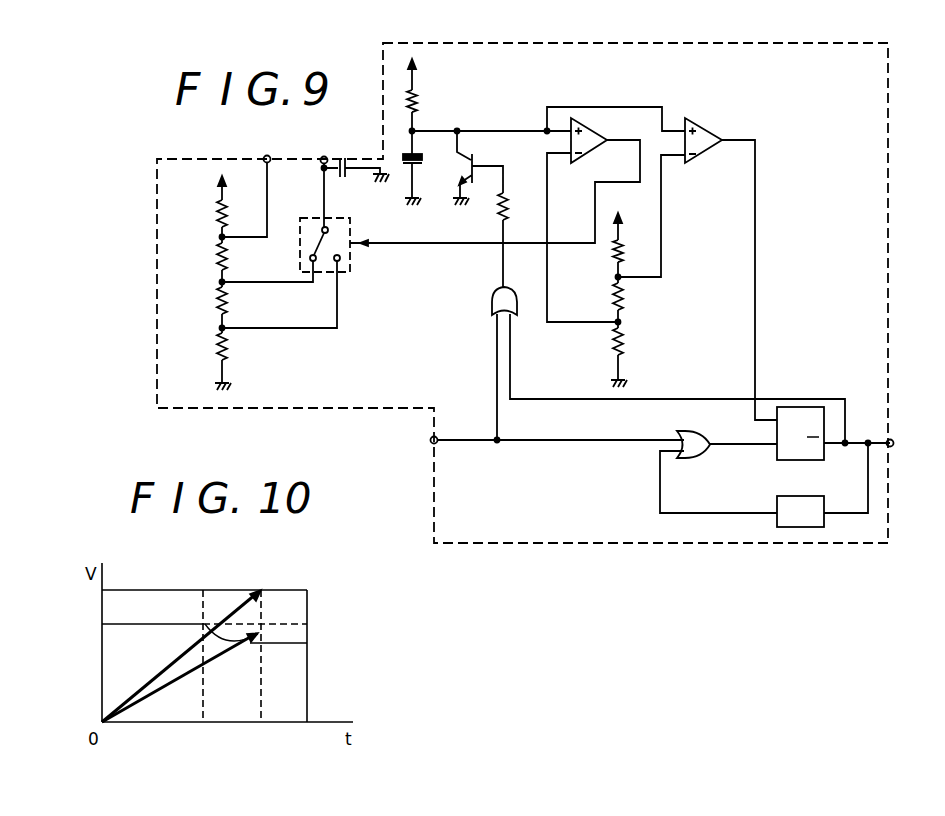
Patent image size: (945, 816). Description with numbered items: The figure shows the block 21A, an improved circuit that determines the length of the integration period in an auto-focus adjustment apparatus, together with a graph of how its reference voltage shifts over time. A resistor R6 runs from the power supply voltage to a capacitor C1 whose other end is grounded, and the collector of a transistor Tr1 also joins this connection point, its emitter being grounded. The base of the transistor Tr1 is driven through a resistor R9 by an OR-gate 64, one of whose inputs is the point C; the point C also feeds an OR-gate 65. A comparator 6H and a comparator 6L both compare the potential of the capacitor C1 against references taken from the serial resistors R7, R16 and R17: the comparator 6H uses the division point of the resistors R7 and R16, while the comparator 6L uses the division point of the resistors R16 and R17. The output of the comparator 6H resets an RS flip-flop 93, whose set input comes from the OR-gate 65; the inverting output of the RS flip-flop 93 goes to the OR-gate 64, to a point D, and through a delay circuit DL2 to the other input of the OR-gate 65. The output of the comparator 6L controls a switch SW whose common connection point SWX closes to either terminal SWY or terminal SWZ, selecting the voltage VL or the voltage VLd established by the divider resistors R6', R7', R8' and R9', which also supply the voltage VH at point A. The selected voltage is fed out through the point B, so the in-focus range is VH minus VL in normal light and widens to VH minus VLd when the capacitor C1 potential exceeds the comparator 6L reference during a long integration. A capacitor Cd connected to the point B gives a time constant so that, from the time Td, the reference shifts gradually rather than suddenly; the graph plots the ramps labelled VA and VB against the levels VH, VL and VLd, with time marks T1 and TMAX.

In FIG. 9, the block 21A is at (888, 62).
In FIG. 9, the resistor R6 is at (425, 85).
In FIG. 9, the capacitor C1 is at (404, 179).
In FIG. 9, the transistor Tr1 is at (478, 168).
In FIG. 9, the resistor R9 is at (516, 206).
In FIG. 9, the OR-gate 64 is at (495, 309).
In FIG. 9, the point C is at (551, 441).
In FIG. 9, the comparator 6L is at (597, 131).
In FIG. 9, the comparator 6H is at (712, 131).
In FIG. 9, the resistor R7 is at (631, 237).
In FIG. 9, the resistor R16 is at (636, 296).
In FIG. 9, the resistor R17 is at (636, 341).
In FIG. 9, the RS flip-flop 93 is at (776, 458).
In FIG. 9, the point D is at (898, 444).
In FIG. 9, the delay circuit DL2 is at (838, 484).
In FIG. 9, the OR-gate 65 is at (690, 432).
In FIG. 9, the point A is at (247, 186).
In FIG. 9, the point B is at (323, 181).
In FIG. 9, the resistor R6' is at (237, 201).
In FIG. 9, the resistor R7' is at (237, 256).
In FIG. 9, the resistor R8' is at (237, 300).
In FIG. 9, the resistor R9' is at (237, 346).
In FIG. 9, the reference voltage VH is at (205, 238).
In FIG. 10, the reference voltage VH is at (218, 593).
In FIG. 9, the reference voltage VL is at (208, 283).
In FIG. 10, the reference voltage VL is at (217, 627).
In FIG. 9, the reference voltage VLd is at (204, 329).
In FIG. 10, the reference voltage VLd is at (296, 649).
In FIG. 9, the switch SW is at (349, 218).
In FIG. 9, the connection point SWX is at (307, 227).
In FIG. 9, the terminal SWY is at (309, 263).
In FIG. 9, the terminal SWZ is at (309, 291).
In FIG. 9, the capacitor Cd is at (356, 176).
In FIG. 10, the time Td is at (205, 669).
In FIG. 10, the time T1 is at (262, 669).
In FIG. 10, the maximum time TMAX is at (308, 741).
In FIG. 10, the voltage at terminal A VA is at (181, 646).
In FIG. 10, the voltage at terminal B VB is at (180, 673).